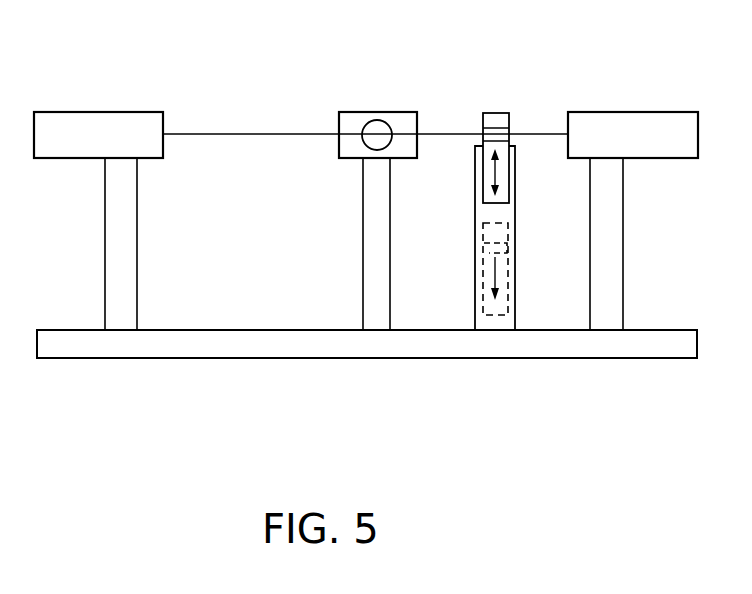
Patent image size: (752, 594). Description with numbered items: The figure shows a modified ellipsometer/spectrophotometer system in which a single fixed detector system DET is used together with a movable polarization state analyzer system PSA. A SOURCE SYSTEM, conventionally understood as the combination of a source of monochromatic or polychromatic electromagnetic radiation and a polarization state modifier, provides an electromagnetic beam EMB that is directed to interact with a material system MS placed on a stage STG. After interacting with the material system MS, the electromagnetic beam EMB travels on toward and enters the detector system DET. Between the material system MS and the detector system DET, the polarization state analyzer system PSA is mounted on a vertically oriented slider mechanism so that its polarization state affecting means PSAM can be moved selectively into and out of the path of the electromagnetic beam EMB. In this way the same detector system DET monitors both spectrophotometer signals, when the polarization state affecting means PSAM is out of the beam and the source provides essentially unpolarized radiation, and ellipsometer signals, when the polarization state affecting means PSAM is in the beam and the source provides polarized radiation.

The source system SOURCE SYSTEM is at (98, 184).
The material system MS is at (382, 108).
The stage STG is at (350, 163).
The polarization state affecting means PSAM is at (510, 131).
The electromagnetic beam EMB is at (538, 138).
The detector system DET is at (633, 221).
The polarization state analyzer system PSA is at (510, 293).